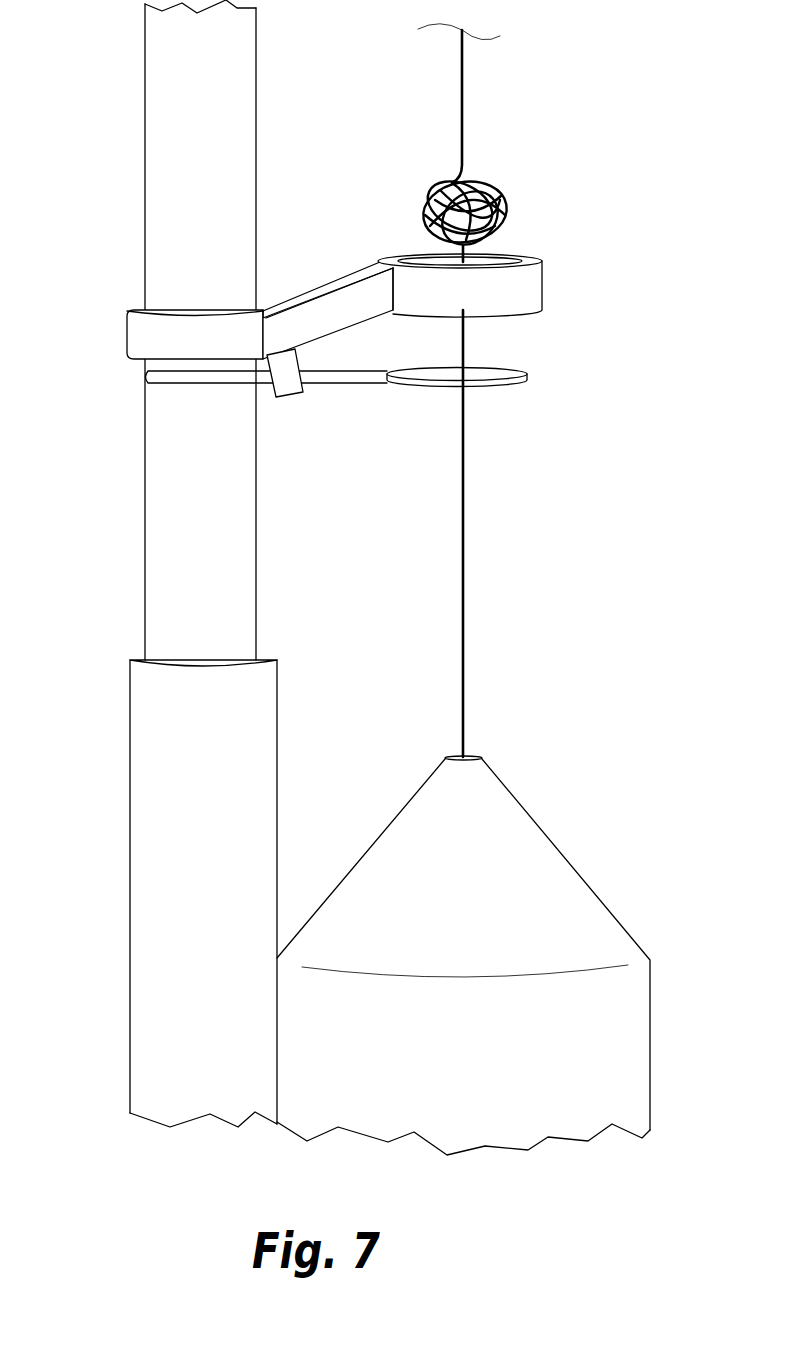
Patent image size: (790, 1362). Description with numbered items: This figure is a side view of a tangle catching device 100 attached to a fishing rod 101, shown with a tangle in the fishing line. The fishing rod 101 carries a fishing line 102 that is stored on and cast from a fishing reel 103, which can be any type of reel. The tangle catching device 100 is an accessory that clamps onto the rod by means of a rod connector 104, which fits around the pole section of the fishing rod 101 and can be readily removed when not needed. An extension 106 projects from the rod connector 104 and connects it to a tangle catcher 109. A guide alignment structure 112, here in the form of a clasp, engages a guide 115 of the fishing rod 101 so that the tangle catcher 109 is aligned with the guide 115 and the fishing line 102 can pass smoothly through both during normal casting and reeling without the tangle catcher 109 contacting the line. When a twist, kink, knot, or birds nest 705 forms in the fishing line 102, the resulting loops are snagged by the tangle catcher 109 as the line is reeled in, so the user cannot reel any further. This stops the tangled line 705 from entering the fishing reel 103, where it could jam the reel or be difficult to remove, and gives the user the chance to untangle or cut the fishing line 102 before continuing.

The tangle catching device 100 is at (354, 337).
The fishing rod 101 is at (152, 747).
The fishing line 102 is at (465, 88).
The fishing reel 103 is at (547, 877).
The rod connector 104 is at (127, 330).
The extension 106 is at (322, 317).
The tangle catcher 109 is at (518, 286).
The guide alignment structure 112 is at (298, 400).
The guide 115 is at (530, 377).
The birds nest 705 is at (487, 183).